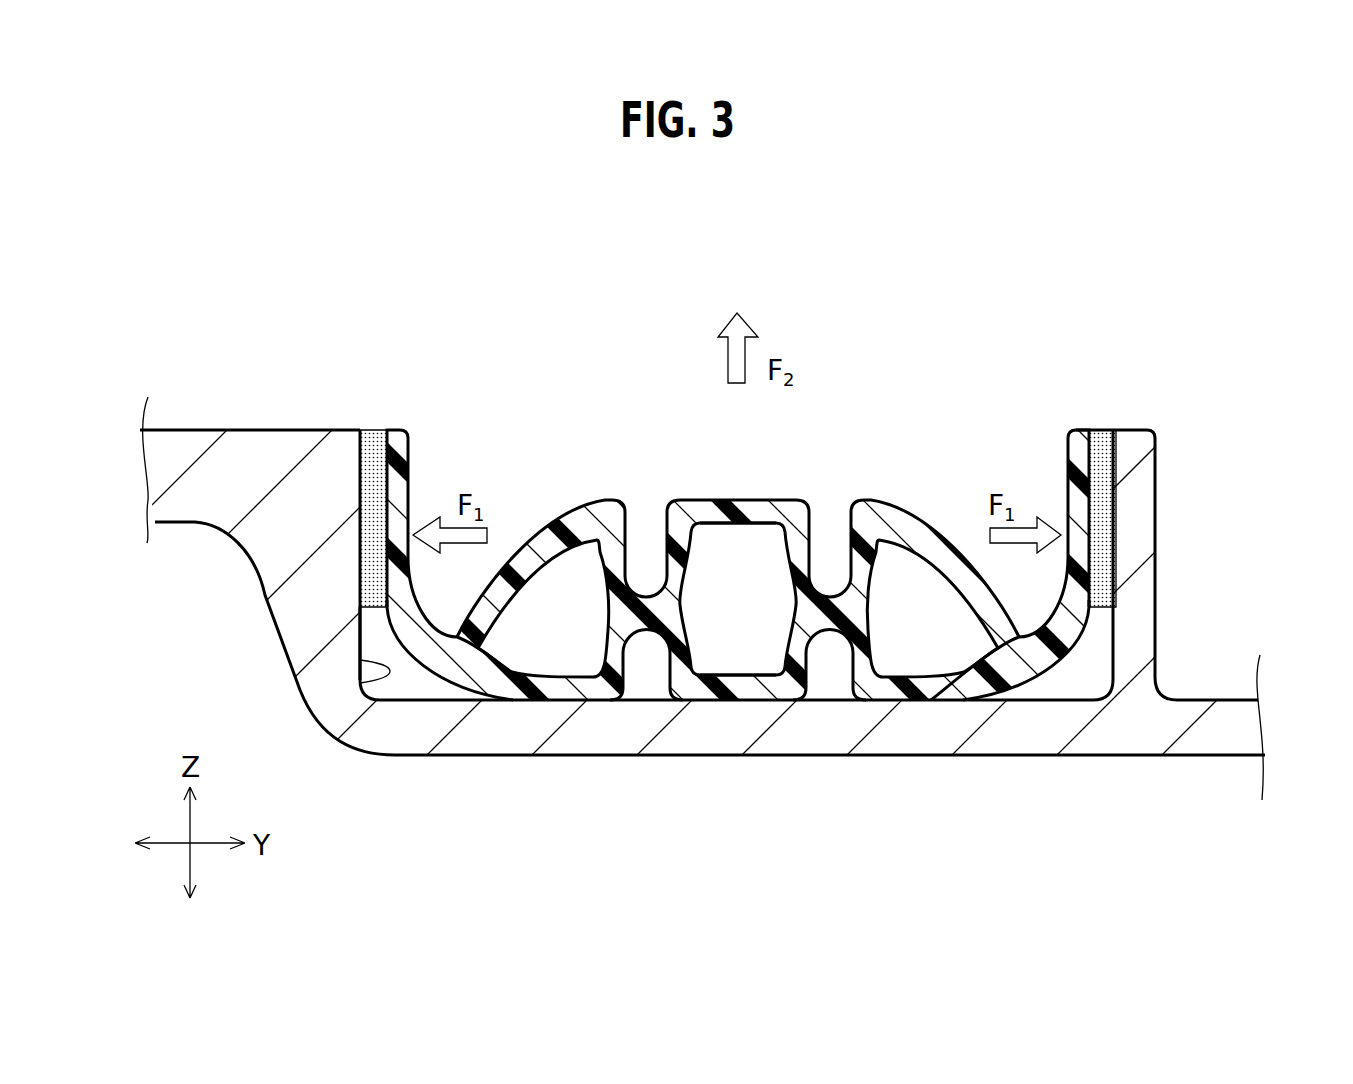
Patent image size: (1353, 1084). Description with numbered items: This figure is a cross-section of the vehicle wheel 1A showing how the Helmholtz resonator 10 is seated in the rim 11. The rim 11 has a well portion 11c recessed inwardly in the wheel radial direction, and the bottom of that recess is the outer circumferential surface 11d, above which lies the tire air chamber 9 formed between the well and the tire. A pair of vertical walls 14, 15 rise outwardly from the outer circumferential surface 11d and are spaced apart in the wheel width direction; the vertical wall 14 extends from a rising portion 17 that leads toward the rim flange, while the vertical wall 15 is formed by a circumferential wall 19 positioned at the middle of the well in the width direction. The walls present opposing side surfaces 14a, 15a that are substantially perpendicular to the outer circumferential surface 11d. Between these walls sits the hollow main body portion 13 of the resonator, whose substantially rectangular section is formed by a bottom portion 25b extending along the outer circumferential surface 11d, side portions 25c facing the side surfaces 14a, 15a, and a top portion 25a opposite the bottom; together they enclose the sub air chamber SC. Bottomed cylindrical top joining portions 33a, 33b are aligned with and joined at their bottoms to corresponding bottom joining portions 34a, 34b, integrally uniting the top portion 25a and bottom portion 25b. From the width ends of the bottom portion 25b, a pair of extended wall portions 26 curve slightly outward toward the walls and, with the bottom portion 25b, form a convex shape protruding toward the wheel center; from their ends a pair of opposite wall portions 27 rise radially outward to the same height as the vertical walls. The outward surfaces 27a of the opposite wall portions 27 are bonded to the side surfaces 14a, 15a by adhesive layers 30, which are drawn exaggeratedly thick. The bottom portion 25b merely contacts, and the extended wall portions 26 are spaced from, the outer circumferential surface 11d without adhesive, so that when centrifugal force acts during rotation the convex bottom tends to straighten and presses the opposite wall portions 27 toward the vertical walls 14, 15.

The vehicle wheel 1A is at (1010, 331).
The tire air chamber 9 is at (736, 231).
The Helmholtz resonator 10 is at (666, 586).
The rim 11 is at (600, 800).
The well portion 11c is at (727, 738).
The outer circumferential surface 11d is at (1053, 700).
The main body portion 13 is at (705, 496).
The vertical wall 14 is at (333, 530).
The side surface 14a is at (387, 475).
The vertical wall 15 is at (1145, 580).
The side surface 15a is at (1107, 498).
The rising portion 17 is at (360, 683).
The circumferential wall 19 is at (1160, 427).
The top portion 25a is at (760, 520).
The bottom portion 25b is at (740, 688).
The side portions 25c is at (523, 572).
The extended wall portions 26 is at (408, 660).
The opposite wall portions 27 is at (412, 470).
The outward surfaces 27a is at (355, 605).
The adhesive layers 30 is at (373, 437).
The top joining portions 33a is at (627, 502).
The top joining portions 33b is at (848, 502).
The bottom joining portions 34a is at (645, 668).
The bottom joining portions 34b is at (832, 668).
The sub air chamber SC is at (757, 614).